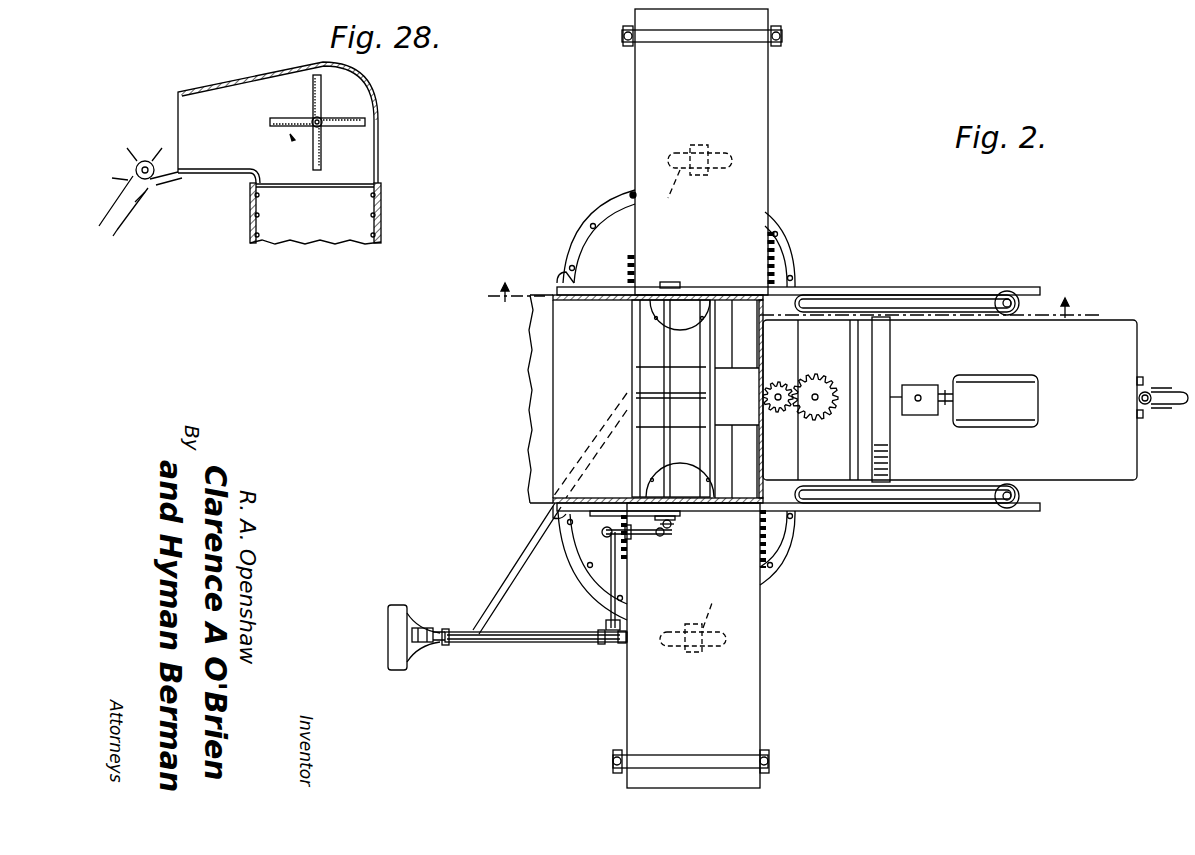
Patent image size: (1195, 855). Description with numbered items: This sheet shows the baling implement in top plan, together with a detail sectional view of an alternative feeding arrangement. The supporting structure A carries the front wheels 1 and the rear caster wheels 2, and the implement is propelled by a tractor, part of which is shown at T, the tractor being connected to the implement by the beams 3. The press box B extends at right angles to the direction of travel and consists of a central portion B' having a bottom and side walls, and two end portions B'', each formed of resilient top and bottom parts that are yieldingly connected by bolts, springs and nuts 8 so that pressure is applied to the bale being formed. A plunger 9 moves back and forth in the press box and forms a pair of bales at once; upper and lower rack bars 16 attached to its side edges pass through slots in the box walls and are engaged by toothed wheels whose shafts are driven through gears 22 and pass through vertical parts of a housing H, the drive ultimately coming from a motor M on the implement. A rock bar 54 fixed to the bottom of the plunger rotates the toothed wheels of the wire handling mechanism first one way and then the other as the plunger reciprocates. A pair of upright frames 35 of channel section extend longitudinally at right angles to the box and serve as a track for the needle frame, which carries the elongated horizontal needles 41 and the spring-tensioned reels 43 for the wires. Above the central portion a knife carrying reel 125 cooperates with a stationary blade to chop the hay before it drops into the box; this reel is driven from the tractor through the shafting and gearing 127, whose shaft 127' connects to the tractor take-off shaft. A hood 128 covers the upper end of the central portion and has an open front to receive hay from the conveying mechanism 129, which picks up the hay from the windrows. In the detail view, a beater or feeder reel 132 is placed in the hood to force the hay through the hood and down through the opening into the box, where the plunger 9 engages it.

In FIG. 2, the front wheels 1 is at (696, 398).
In FIG. 2, the rear caster wheels 2 is at (1168, 398).
In FIG. 2, the beams 3 is at (500, 660).
In FIG. 2, the nuts 8 is at (614, 758).
In FIG. 28, the plunger 9 is at (303, 236).
In FIG. 2, the plunger 9 is at (656, 399).
In FIG. 2, the rack bars 16 is at (772, 268).
In FIG. 2, the gears 22 is at (812, 410).
In FIG. 2, the upright frames 35 is at (885, 289).
In FIG. 2, the needles 41 is at (924, 300).
In FIG. 2, the reels 43 is at (1012, 294).
In FIG. 2, the rock bar 54 is at (726, 296).
In FIG. 2, the knife carrying reel 125 is at (640, 341).
In FIG. 2, the shafting and gearing 127 is at (638, 577).
In FIG. 2, the shaft 127' is at (536, 648).
In FIG. 28, the hood 128 is at (282, 68).
In FIG. 2, the hood 128 is at (586, 298).
In FIG. 28, the conveying mechanism 129 is at (145, 160).
In FIG. 28, the beater or feeder reel 132 is at (326, 118).
In FIG. 2, the supporting structure A is at (1106, 320).
In FIG. 2, the press box B is at (790, 187).
In FIG. 28, the central portion B' is at (408, 216).
In FIG. 2, the central portion B' is at (792, 399).
In FIG. 2, the end portions B'' is at (717, 398).
In FIG. 2, the housing H is at (633, 195).
In FIG. 2, the motor M is at (997, 386).
In FIG. 2, the tractor T is at (405, 608).